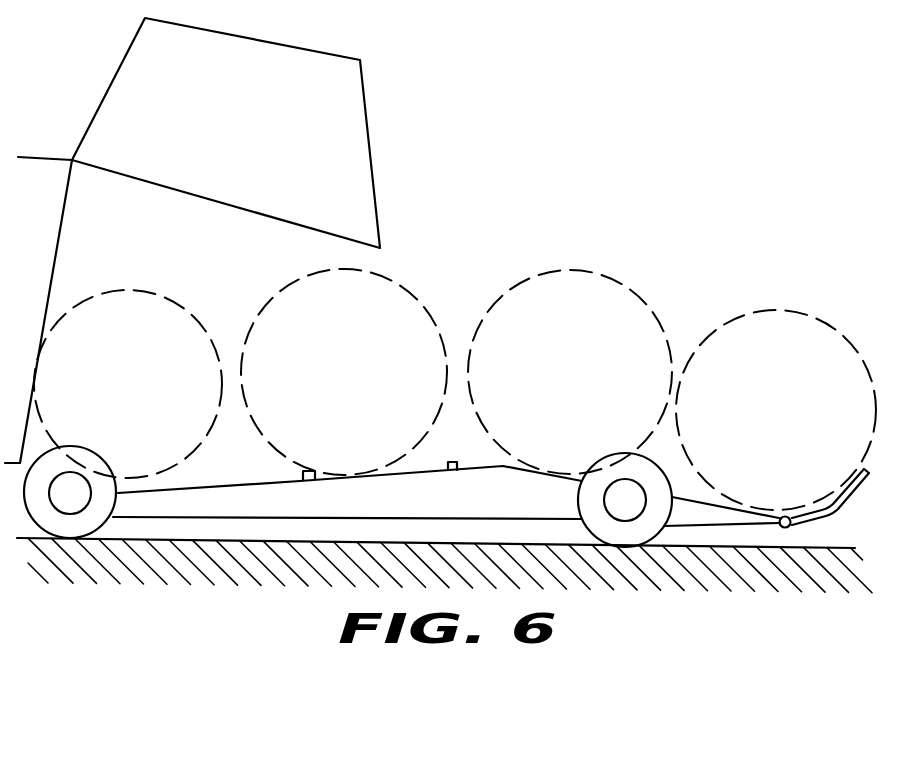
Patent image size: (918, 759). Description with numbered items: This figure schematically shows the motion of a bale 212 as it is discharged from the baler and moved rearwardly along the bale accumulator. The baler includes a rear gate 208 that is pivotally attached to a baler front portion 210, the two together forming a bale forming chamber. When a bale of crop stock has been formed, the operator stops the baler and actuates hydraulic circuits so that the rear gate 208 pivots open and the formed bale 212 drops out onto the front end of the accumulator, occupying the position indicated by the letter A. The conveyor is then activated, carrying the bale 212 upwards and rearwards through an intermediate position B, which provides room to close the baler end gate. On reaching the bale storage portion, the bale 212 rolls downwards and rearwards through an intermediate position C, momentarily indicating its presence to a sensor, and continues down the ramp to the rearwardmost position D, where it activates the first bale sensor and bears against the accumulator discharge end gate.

The rear gate 208 is at (370, 145).
The baler front portion 210 is at (40, 157).
The bale 212 is at (455, 370).
The front end position A is at (137, 287).
The intermediate position B is at (299, 284).
The intermediate position C is at (514, 286).
The rearwardmost position D is at (758, 294).